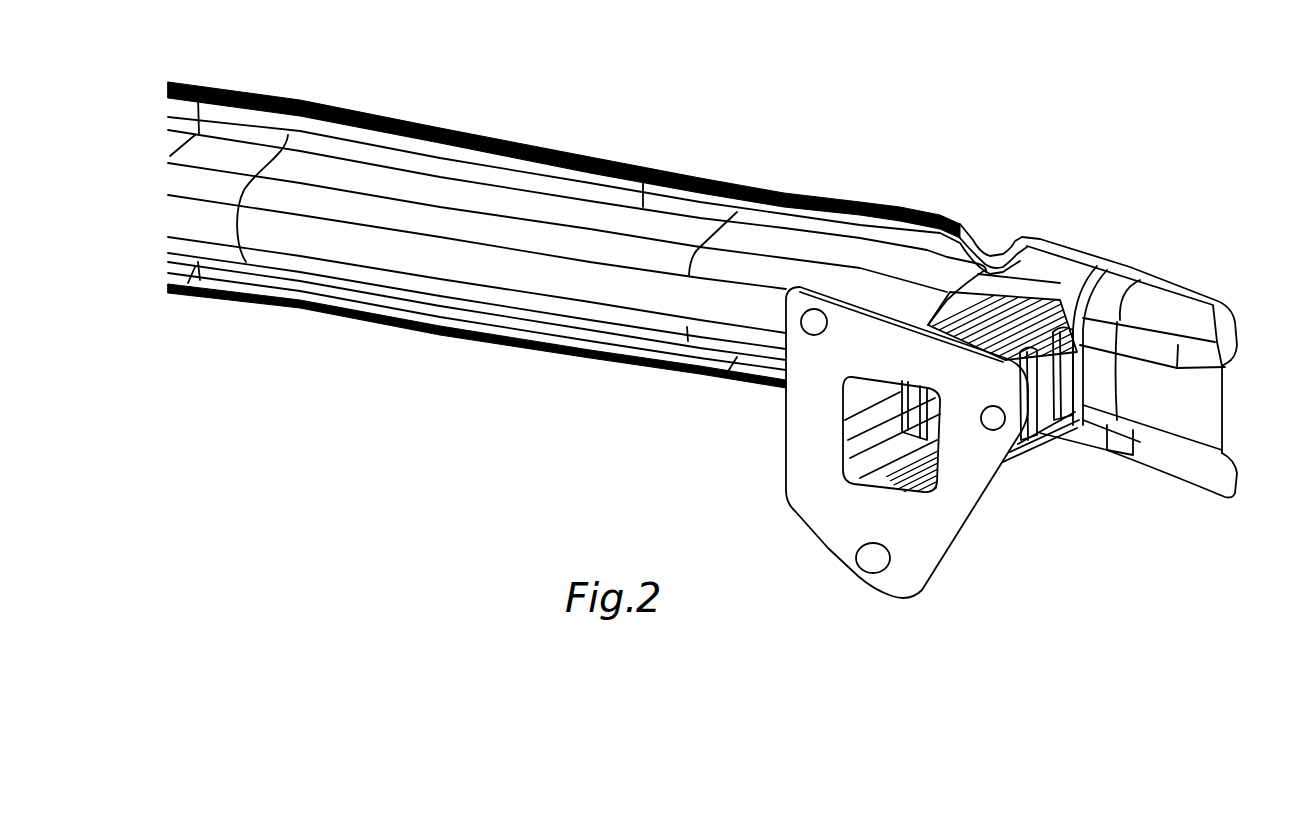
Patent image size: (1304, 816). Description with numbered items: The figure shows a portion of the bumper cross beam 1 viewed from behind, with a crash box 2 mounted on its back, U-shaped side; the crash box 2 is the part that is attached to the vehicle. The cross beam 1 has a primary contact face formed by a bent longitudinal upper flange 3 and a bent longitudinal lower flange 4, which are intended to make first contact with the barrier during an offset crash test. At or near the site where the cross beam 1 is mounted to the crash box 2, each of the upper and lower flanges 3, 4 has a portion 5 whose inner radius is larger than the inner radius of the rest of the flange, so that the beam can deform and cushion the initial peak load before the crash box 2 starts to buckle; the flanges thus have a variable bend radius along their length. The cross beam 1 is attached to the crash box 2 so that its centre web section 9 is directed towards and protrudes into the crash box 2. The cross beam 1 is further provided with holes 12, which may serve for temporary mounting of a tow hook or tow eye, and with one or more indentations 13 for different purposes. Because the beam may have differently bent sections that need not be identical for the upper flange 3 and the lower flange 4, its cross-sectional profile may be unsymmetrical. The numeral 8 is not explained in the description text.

The cross beam 1 is at (365, 257).
The crash box 2 is at (1045, 387).
The upper flange 3 is at (668, 176).
The lower flange 4 is at (583, 343).
The portion 5 is at (1085, 287).
The reinforcing bead 8 is at (562, 185).
The centre web section 9 is at (332, 237).
The holes 12 is at (1053, 277).
The indentation 13 is at (990, 250).